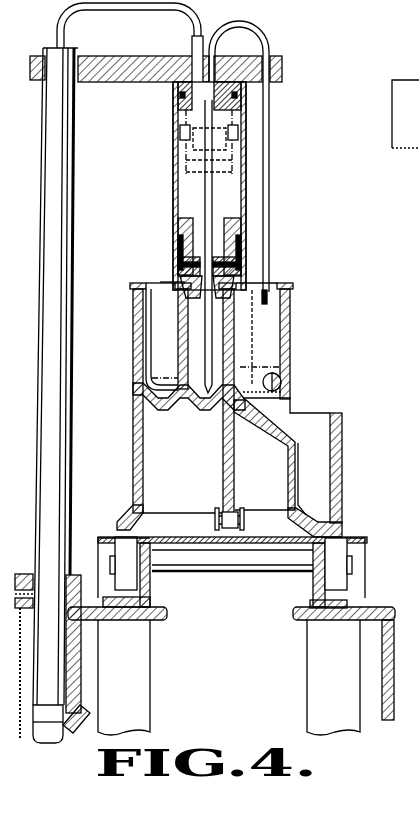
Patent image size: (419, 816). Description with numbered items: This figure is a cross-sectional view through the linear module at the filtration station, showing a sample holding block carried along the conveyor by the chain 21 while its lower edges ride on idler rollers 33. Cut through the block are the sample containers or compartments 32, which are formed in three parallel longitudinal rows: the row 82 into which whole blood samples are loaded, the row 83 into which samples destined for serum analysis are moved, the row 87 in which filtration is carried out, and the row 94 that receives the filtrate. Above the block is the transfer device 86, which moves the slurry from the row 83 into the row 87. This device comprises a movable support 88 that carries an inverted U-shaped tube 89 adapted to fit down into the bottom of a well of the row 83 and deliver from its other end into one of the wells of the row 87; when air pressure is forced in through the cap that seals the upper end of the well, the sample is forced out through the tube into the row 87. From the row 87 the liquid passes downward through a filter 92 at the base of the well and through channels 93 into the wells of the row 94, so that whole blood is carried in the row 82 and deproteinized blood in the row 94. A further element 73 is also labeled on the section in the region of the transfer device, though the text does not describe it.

The movable support 88 is at (50, 52).
The inverted U-shaped tube 89 is at (262, 33).
The transfer device 86 is at (283, 170).
The nozzle coupling 73 is at (243, 283).
The row of sample containers 82 is at (148, 287).
The compartments 32 is at (152, 342).
The row of wells 87 is at (283, 345).
The filter 92 is at (282, 379).
The channels 93 is at (278, 422).
The row of sample containers 94 is at (332, 478).
The row of wells 83 is at (192, 398).
The chain 21 is at (212, 522).
The idler rollers 33 is at (118, 553).